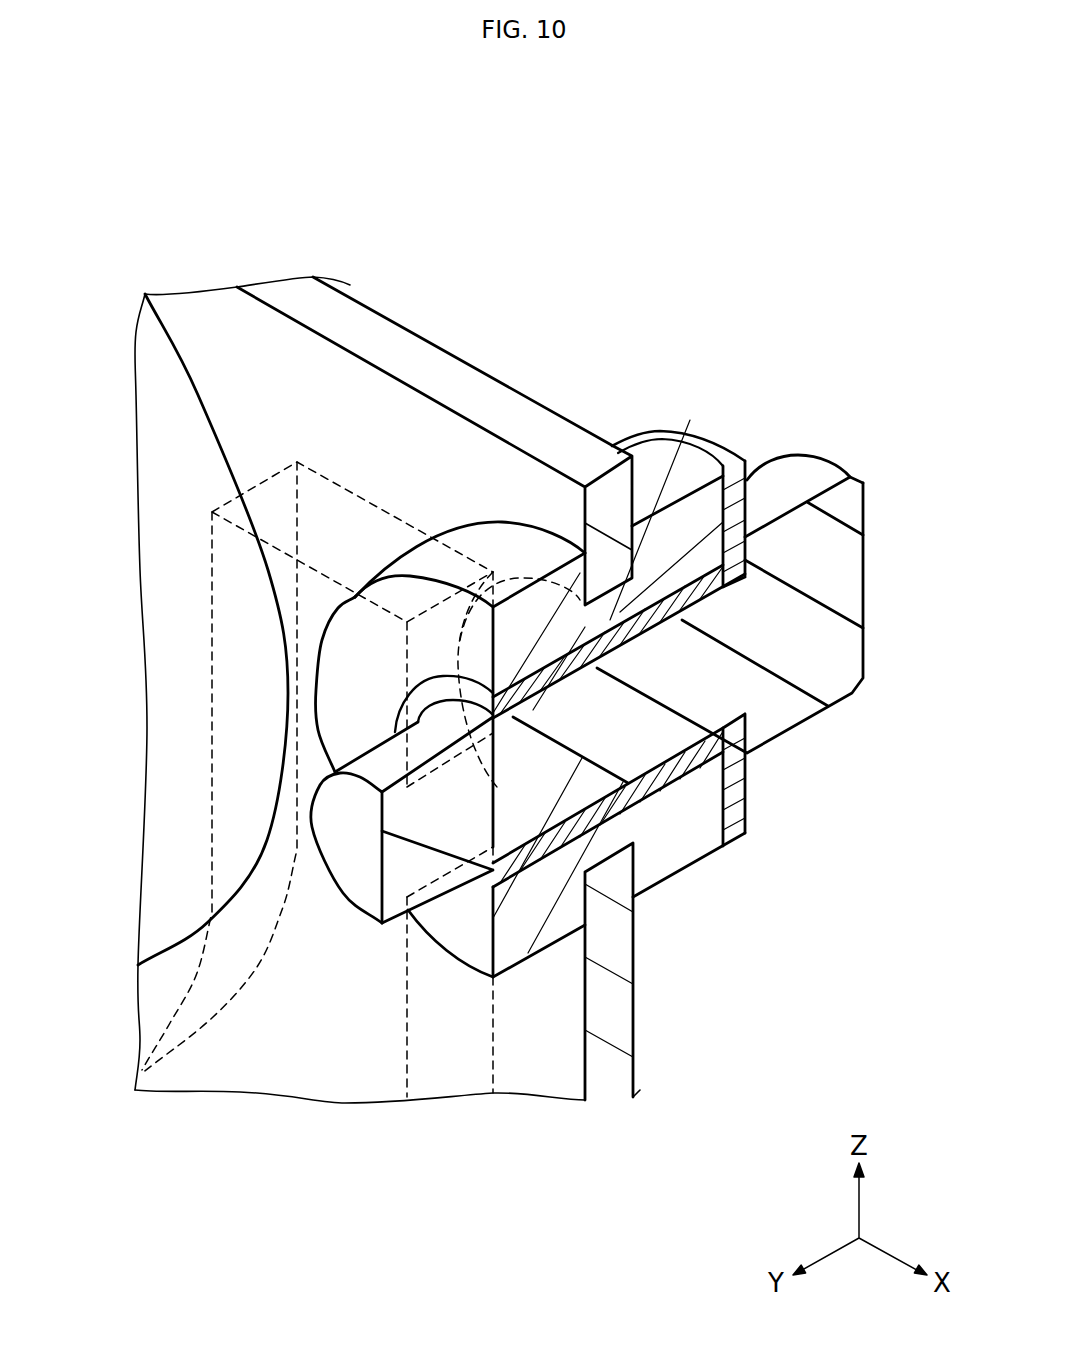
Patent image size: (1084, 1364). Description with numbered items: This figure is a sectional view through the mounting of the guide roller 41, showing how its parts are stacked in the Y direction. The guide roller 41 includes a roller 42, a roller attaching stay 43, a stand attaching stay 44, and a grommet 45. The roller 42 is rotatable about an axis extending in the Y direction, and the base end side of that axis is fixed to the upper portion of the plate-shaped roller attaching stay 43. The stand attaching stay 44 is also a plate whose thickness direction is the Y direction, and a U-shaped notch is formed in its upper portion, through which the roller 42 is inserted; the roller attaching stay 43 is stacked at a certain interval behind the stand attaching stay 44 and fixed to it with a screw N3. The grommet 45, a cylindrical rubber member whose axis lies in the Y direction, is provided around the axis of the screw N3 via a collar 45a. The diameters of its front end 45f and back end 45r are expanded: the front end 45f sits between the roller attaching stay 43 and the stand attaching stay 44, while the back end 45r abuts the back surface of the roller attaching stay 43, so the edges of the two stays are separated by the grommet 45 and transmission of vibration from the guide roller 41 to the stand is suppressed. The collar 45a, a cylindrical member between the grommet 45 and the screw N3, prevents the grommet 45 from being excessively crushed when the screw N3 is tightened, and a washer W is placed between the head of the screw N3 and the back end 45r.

The guide roller 41 is at (785, 218).
The roller 42 is at (163, 480).
The roller attaching stay 43 is at (455, 385).
The stand attaching stay 44 is at (235, 597).
The grommet 45 is at (639, 458).
The collar 45a is at (681, 594).
The front end 45f is at (523, 937).
The back end 45r is at (677, 850).
The washer W is at (737, 458).
The screw N3 is at (842, 505).